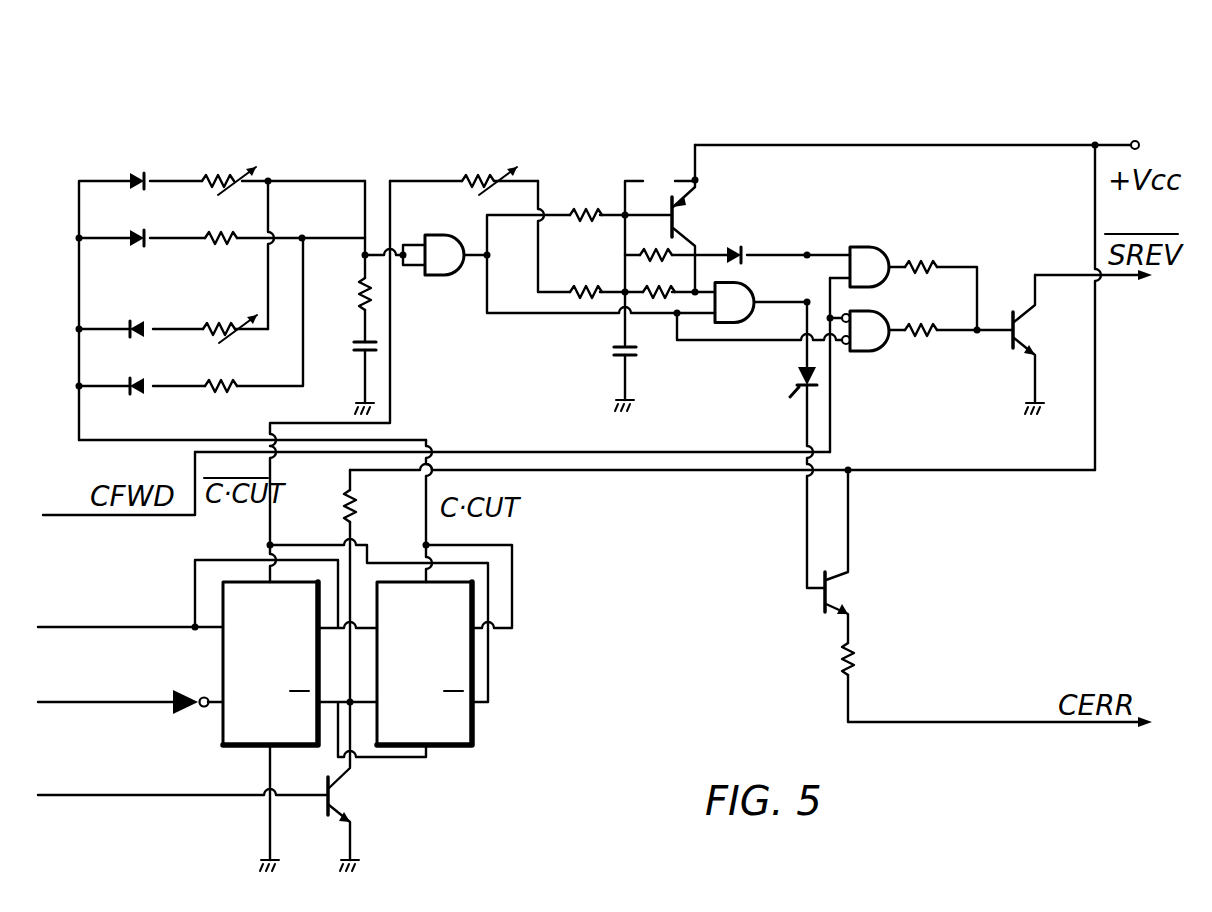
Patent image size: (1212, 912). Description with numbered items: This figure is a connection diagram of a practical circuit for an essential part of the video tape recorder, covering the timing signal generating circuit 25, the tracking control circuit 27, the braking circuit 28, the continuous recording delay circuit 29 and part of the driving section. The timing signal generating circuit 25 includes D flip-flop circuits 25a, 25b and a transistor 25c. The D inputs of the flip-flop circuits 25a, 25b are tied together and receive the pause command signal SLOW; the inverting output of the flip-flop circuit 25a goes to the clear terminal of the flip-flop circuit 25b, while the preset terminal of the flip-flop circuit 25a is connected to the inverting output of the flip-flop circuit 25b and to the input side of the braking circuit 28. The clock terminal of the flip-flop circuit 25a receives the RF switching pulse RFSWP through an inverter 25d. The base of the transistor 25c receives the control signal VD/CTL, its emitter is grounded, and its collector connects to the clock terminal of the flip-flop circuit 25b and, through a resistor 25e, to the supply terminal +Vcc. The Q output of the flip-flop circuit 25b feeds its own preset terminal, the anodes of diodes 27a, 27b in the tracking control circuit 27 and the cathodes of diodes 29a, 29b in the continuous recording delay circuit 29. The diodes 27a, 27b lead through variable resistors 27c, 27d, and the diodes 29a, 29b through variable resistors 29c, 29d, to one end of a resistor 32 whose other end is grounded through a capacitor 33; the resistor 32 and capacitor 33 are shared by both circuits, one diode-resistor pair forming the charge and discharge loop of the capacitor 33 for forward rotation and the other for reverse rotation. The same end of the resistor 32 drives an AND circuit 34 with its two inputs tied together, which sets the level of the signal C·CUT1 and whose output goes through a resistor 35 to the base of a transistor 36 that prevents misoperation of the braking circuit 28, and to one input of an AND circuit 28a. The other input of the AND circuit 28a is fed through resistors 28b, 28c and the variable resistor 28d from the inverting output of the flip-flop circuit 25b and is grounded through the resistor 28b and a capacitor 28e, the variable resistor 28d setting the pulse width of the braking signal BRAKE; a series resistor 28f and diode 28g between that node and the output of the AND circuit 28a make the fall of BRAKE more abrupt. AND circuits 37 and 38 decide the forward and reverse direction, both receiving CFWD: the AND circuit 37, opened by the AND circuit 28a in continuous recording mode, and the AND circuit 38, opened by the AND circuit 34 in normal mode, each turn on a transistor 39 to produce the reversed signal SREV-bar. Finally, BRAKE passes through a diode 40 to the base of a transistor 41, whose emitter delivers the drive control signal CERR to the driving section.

The timing signal generating circuit 25 is at (332, 525).
The D flip-flop circuit 25a is at (216, 727).
The D flip-flop circuit 25b is at (455, 750).
The transistor 25c is at (340, 800).
The inverter 25d is at (188, 690).
The resistor 25e is at (356, 508).
The tracking control circuit 27 is at (192, 229).
The diode 27a is at (166, 165).
The diode 27b is at (140, 248).
The variable resistor 27c is at (230, 170).
The variable resistor 27d is at (222, 248).
The braking circuit 28 is at (588, 263).
The AND circuit 28a is at (742, 284).
The resistor 28b is at (648, 320).
The resistor 28c is at (582, 300).
The variable resistor 28d is at (478, 177).
The capacitor 28e is at (618, 366).
The resistor 28f is at (652, 246).
The diode 28g is at (750, 256).
The continuous recording delay circuit 29 is at (161, 339).
The diode 29a is at (143, 338).
The diode 29b is at (143, 395).
The variable resistor 29c is at (220, 336).
The variable resistor 29d is at (225, 395).
The resistor 32 is at (360, 283).
The capacitor 33 is at (359, 350).
The AND circuit 34 is at (438, 283).
The resistor 35 is at (584, 212).
The transistor 36 is at (686, 222).
The AND circuit 37 is at (860, 255).
The AND circuit 38 is at (860, 352).
The transistor 39 is at (1010, 342).
The diode 40 is at (804, 386).
The transistor 41 is at (840, 598).